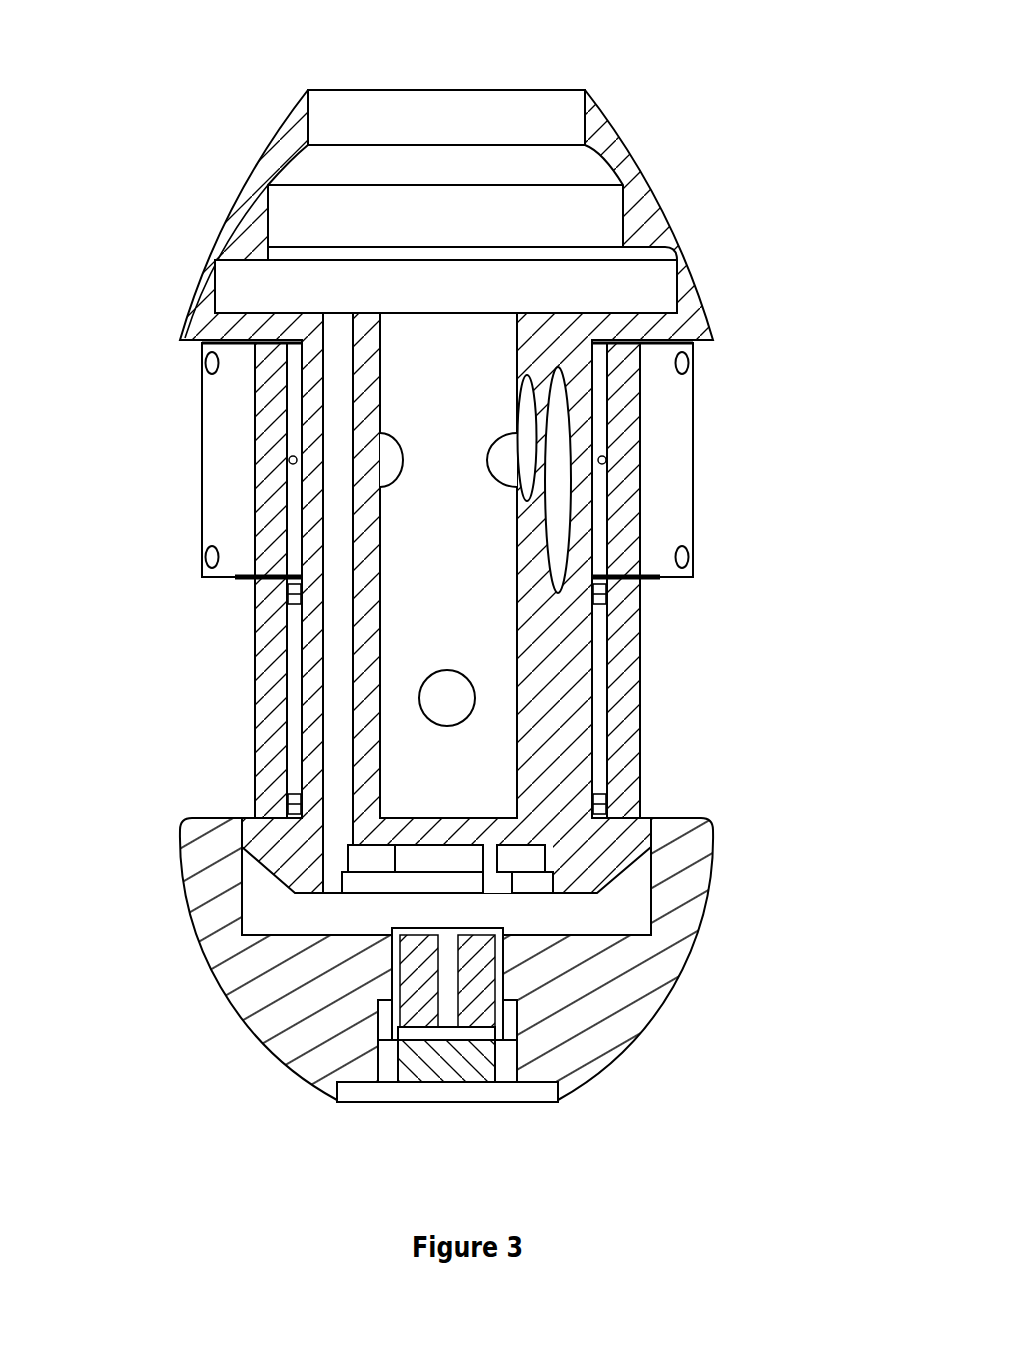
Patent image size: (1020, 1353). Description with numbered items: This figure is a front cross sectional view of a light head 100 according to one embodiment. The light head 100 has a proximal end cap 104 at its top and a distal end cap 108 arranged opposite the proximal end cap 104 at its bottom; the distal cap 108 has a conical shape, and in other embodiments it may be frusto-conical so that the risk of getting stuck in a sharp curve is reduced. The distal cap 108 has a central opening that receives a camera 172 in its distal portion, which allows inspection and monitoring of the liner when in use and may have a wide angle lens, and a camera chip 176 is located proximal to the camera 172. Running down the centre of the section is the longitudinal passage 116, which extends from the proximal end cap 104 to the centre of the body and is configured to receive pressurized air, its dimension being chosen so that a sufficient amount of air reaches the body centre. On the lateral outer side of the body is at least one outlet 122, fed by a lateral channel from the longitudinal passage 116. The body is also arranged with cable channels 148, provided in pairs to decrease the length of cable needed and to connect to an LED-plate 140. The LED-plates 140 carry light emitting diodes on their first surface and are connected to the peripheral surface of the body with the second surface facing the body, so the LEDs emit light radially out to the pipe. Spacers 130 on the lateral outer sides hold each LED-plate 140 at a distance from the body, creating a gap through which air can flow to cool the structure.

The light head 100 is at (475, 597).
The proximal end cap 104 is at (427, 90).
The distal end cap 108 is at (628, 1033).
The longitudinal passage 116 is at (465, 702).
The outlet 122 is at (290, 457).
The spacer 130 is at (297, 594).
The LED-plate 140 is at (200, 453).
The cable channel 148 is at (565, 488).
The camera 172 is at (447, 1028).
The camera chip 176 is at (498, 883).